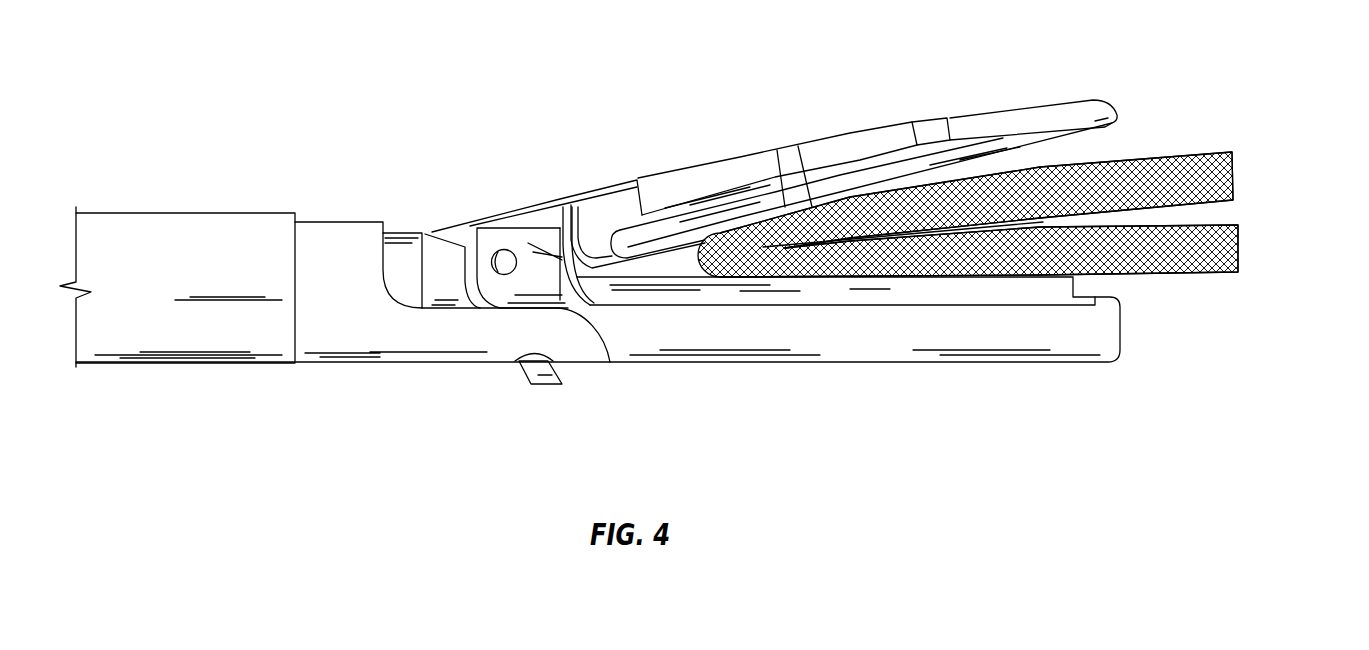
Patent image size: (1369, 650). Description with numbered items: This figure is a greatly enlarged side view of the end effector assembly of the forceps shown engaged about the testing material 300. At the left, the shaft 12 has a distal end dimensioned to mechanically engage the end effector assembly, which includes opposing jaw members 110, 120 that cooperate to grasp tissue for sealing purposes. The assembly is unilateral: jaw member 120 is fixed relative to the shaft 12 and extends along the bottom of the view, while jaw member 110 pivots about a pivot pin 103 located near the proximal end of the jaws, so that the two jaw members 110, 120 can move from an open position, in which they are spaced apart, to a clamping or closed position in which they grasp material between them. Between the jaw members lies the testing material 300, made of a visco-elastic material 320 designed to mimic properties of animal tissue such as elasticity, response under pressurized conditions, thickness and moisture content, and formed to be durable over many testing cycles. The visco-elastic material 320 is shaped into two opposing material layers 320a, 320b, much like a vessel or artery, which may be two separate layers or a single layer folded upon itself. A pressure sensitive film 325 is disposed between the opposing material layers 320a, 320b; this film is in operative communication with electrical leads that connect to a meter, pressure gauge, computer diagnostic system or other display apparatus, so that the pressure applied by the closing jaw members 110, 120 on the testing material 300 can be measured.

The shaft 12 is at (175, 212).
The pivot pin 103 is at (503, 258).
The jaw member 110 is at (1022, 118).
The jaw member 120 is at (606, 292).
The testing material 300 is at (1013, 253).
The visco-elastic material 320 is at (1013, 272).
The material layer 320a is at (1235, 170).
The material layer 320b is at (1238, 255).
The pressure sensitive film 325 is at (1043, 222).